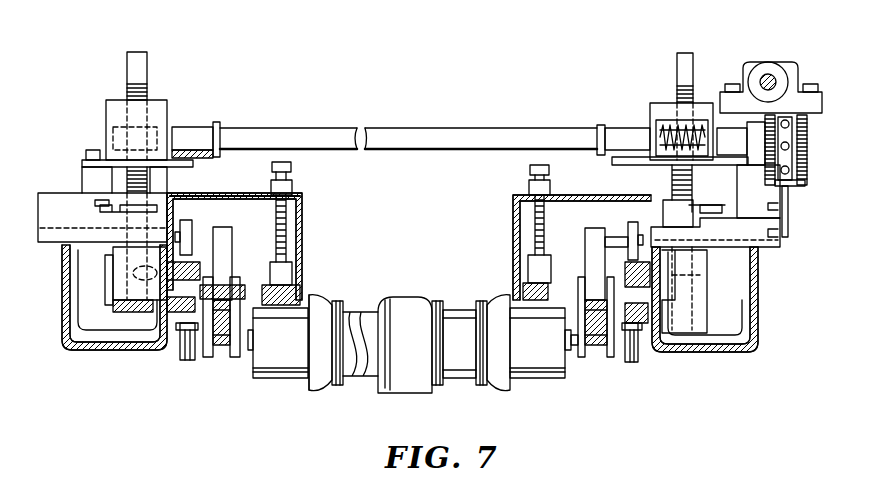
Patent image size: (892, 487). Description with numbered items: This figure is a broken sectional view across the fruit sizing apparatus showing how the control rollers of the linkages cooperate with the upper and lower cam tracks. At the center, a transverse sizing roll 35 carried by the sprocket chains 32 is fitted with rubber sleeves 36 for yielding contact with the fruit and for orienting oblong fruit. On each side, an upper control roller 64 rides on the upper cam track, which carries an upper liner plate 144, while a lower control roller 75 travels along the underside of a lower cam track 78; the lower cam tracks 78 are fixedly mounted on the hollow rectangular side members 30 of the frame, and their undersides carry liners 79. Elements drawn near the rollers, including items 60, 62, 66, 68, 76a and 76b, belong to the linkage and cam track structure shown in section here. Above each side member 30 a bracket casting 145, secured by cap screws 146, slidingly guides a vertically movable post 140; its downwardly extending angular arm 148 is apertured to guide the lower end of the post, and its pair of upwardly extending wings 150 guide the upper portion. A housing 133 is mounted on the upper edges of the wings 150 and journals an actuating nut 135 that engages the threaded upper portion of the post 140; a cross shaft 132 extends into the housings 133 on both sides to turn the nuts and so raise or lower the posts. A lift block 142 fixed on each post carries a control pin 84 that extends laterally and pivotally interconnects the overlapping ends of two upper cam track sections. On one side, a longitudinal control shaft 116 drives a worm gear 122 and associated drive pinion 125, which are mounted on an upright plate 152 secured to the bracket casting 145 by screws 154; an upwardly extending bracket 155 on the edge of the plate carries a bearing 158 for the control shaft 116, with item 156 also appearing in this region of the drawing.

The vertically movable post 140 is at (145, 61).
The housing 133 is at (158, 108).
The actuating nut 135 is at (100, 131).
The cross shaft 132 is at (376, 128).
The bracket casting 145 is at (50, 193).
The cap screws 146 is at (100, 212).
The upwardly extending wings 150 is at (123, 218).
The control pin 84 is at (115, 260).
The arm 76b is at (115, 292).
The lift block 142 is at (128, 300).
The upper control roller 64 is at (183, 228).
The bolt 60 is at (232, 230).
The upper liner plate 144 is at (198, 250).
The arm 76a is at (205, 278).
The axle 66 is at (218, 280).
The wheel 68 is at (237, 357).
The lower cam track 78 is at (215, 350).
The second lower control roller 75 is at (182, 363).
The liner 79 is at (645, 325).
The sprocket chain 32 is at (595, 372).
The plate 62 is at (613, 230).
The rubber sleeve 36 is at (388, 388).
The transverse sizing roll 35 is at (462, 380).
The upper hollow longitudinal side member 30 is at (62, 318).
The downwardly extending angular arm 148 is at (83, 322).
The bearing 158 is at (748, 66).
The longitudinal control shaft 116 is at (773, 76).
The worm gear 122 is at (771, 115).
The bolt block 156 is at (795, 135).
The upwardly extending bracket 155 is at (785, 158).
The drive pinion 125 is at (803, 183).
The upright plate 152 is at (788, 215).
The screws 154 is at (788, 230).